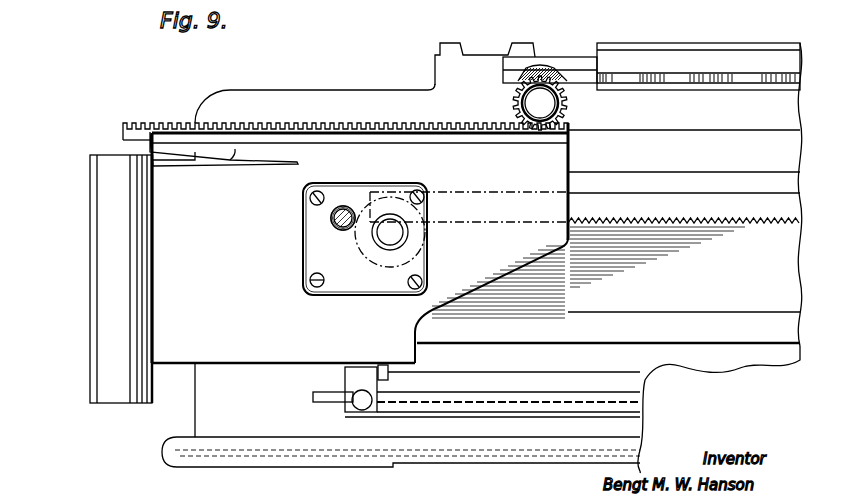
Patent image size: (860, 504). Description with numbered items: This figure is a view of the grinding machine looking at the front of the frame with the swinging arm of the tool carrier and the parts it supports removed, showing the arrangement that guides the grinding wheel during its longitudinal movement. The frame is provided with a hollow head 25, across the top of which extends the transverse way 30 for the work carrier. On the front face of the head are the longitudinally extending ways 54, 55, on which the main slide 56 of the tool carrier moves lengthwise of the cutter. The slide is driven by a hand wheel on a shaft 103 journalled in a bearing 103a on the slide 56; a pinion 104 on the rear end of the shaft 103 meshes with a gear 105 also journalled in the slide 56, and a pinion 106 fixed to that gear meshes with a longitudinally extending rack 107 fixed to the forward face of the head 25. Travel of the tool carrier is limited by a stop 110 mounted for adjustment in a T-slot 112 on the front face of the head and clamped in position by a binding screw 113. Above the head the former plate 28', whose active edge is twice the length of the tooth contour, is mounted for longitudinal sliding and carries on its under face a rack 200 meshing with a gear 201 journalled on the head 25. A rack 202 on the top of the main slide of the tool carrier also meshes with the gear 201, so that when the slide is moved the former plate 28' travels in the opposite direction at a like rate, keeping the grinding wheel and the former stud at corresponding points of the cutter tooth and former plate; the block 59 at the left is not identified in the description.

The hollow head 25 is at (337, 97).
The rack 202 is at (277, 122).
The way 30 is at (462, 55).
The former plate 28' is at (651, 82).
The rack 200 is at (542, 79).
The gear 201 is at (569, 110).
The way 54 is at (710, 153).
The rack 107 is at (730, 212).
The way 55 is at (612, 317).
The end block 59 is at (100, 257).
The main slide 56 is at (262, 350).
The stop 110 is at (343, 378).
The binding screw 113 is at (335, 399).
The T-slot 112 is at (397, 402).
The gear 105 is at (425, 251).
The pinion 106 is at (408, 235).
The shaft 103 is at (333, 222).
The bearing 103a is at (334, 227).
The pinion 104 is at (334, 237).